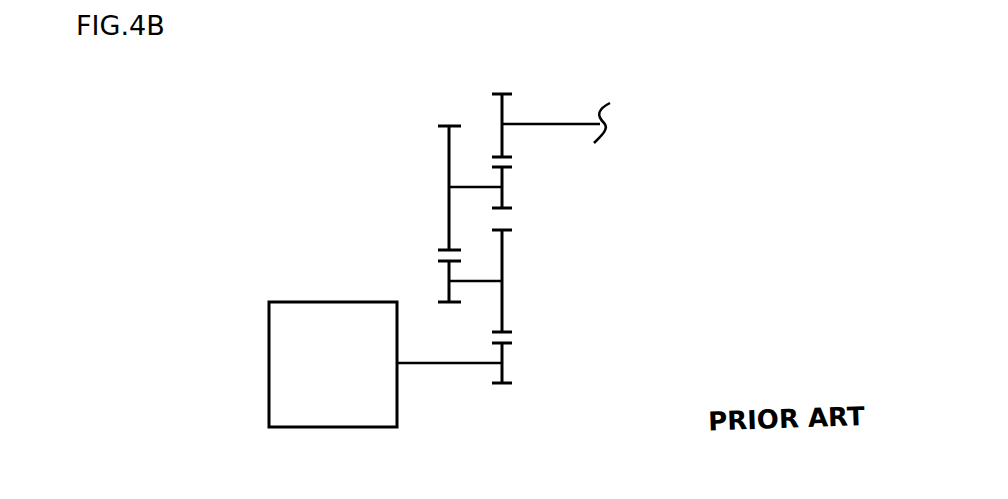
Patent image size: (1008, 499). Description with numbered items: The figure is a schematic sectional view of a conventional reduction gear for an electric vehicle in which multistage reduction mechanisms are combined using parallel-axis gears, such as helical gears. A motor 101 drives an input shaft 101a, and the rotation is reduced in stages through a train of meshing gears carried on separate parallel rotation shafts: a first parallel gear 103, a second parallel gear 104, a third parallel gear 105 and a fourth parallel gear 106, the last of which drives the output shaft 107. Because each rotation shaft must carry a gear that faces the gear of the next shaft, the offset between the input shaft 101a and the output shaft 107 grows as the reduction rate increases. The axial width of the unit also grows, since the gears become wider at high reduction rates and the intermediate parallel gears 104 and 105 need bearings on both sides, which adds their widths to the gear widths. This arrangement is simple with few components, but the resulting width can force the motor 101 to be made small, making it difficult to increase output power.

The motor 101 is at (333, 302).
The input shaft 101a is at (440, 365).
The first parallel gear 103 is at (503, 356).
The second parallel gear 104 is at (503, 262).
The third parallel gear 105 is at (449, 173).
The fourth parallel gear 106 is at (503, 111).
The output shaft 107 is at (565, 127).